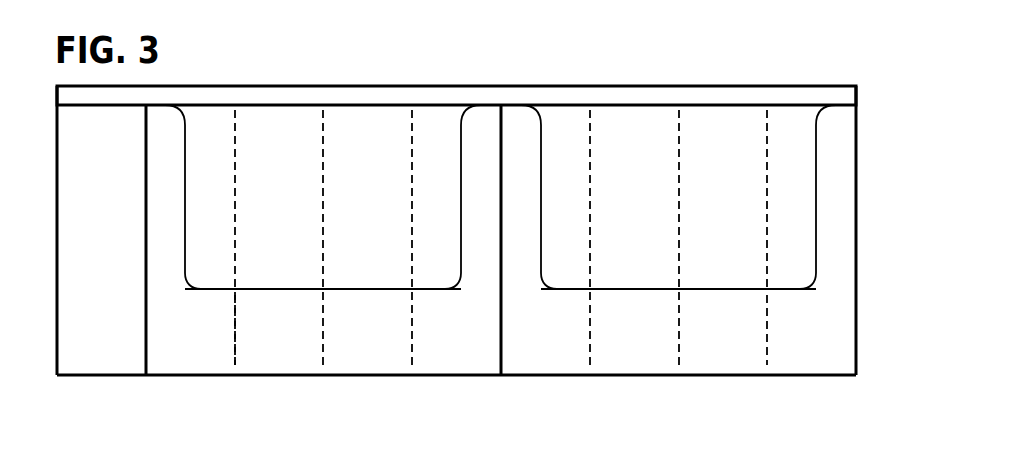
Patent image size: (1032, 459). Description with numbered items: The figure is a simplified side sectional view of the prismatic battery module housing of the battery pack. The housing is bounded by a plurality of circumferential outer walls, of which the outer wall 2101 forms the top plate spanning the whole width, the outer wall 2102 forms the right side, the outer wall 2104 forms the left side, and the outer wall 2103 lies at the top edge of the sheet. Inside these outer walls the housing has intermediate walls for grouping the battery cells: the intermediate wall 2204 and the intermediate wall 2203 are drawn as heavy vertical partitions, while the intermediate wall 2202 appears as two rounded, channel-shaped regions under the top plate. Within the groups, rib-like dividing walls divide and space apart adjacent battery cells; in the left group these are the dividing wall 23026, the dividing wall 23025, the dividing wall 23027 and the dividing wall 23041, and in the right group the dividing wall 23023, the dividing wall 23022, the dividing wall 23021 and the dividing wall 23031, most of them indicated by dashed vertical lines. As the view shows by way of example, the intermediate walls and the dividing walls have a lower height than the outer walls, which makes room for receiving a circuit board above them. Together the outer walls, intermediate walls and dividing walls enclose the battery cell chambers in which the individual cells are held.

The outer wall 2101 is at (557, 86).
The outer wall 2102 is at (858, 96).
The outer wall 2103 is at (262, 6).
The outer wall 2104 is at (56, 97).
The intermediate wall 2202 is at (500, 197).
The intermediate wall 2203 is at (503, 300).
The intermediate wall 2204 is at (144, 296).
The dividing wall 23021 is at (767, 302).
The dividing wall 23022 is at (679, 164).
The dividing wall 23023 is at (590, 164).
The dividing wall 23025 is at (412, 164).
The dividing wall 23026 is at (322, 164).
The dividing wall 23027 is at (235, 303).
The dividing wall 23031 is at (590, 289).
The dividing wall 23041 is at (235, 289).